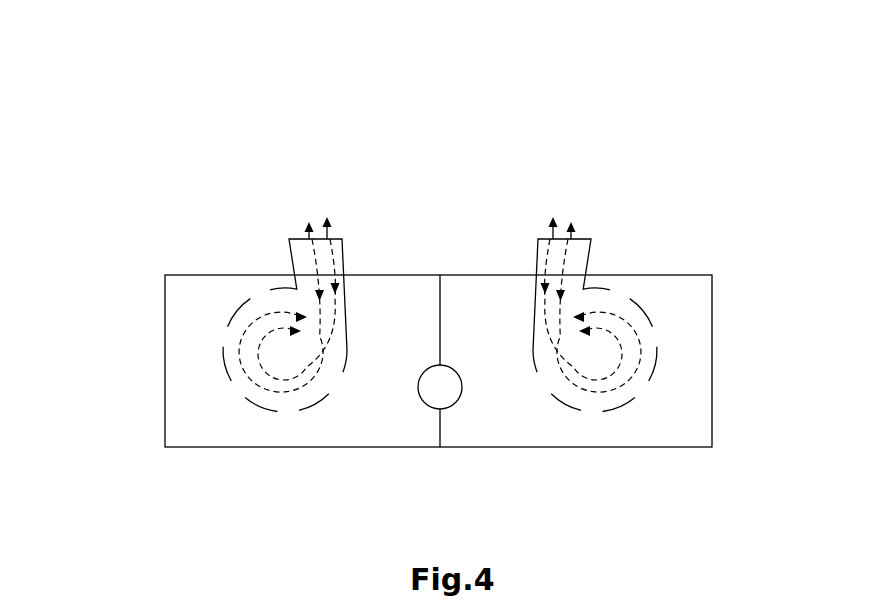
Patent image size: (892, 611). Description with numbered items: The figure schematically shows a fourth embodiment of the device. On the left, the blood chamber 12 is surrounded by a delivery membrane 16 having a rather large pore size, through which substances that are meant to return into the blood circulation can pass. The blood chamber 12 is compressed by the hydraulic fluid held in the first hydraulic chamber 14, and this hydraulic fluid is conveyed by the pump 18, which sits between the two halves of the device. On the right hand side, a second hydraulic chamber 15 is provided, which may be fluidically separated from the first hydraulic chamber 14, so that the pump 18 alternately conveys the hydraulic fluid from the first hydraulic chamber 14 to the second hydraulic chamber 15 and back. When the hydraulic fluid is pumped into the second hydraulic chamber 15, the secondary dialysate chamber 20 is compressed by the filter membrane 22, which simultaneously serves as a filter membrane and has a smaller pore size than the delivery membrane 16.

The blood chamber 12 is at (263, 310).
The first hydraulic chamber 14 is at (195, 330).
The second hydraulic chamber 15 is at (670, 415).
The delivery membrane 16 is at (240, 312).
The pump 18 is at (440, 387).
The secondary dialysate chamber 20 is at (607, 303).
The filter membrane 22 is at (650, 328).